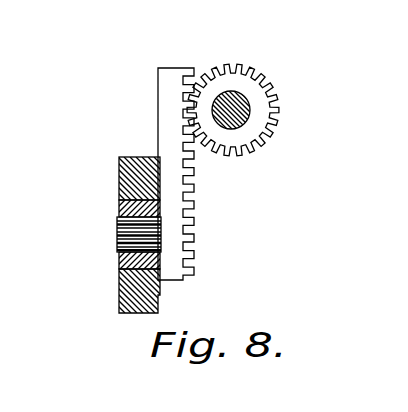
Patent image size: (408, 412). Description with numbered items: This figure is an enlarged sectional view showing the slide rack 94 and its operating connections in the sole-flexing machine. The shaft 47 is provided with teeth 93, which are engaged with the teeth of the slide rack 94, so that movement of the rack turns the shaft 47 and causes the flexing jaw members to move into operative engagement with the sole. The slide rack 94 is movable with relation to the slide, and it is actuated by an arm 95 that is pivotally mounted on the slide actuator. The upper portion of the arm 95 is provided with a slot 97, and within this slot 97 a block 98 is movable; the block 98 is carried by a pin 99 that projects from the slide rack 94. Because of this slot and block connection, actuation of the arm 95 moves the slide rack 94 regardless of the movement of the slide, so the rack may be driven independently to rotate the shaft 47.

The teeth 93 is at (229, 64).
The slide rack 94 is at (173, 68).
The shaft 47 is at (248, 106).
The arm 95 is at (130, 185).
The pin 99 is at (127, 235).
The block 98 is at (123, 260).
The slot 97 is at (133, 268).